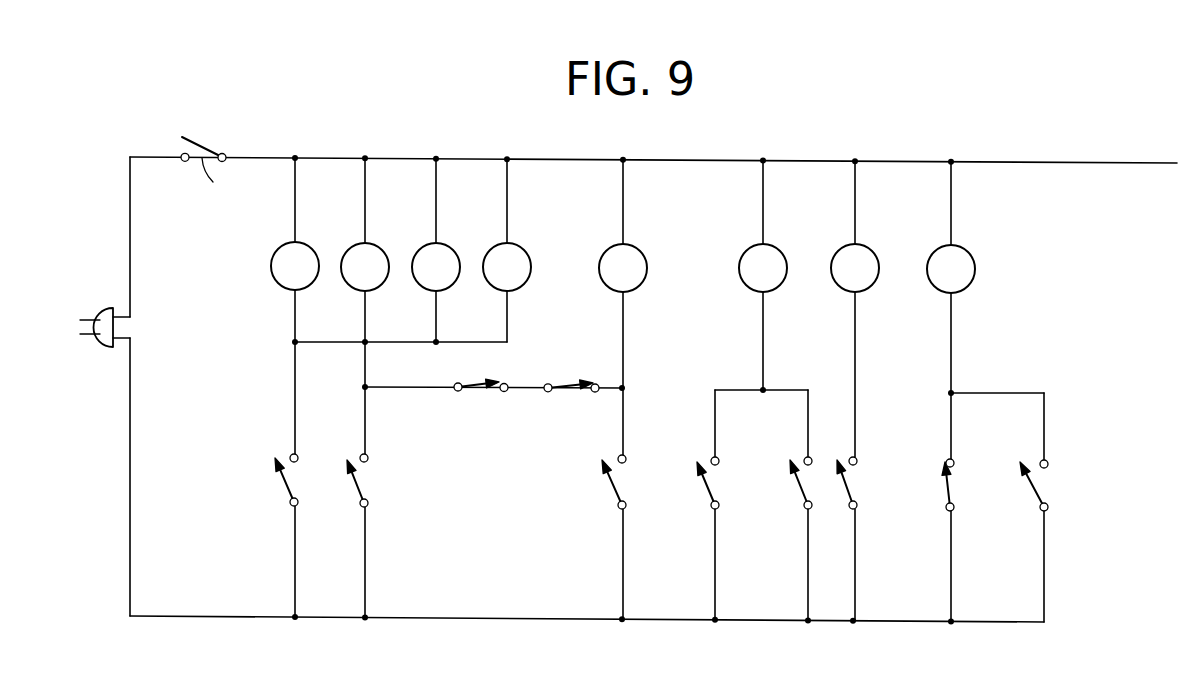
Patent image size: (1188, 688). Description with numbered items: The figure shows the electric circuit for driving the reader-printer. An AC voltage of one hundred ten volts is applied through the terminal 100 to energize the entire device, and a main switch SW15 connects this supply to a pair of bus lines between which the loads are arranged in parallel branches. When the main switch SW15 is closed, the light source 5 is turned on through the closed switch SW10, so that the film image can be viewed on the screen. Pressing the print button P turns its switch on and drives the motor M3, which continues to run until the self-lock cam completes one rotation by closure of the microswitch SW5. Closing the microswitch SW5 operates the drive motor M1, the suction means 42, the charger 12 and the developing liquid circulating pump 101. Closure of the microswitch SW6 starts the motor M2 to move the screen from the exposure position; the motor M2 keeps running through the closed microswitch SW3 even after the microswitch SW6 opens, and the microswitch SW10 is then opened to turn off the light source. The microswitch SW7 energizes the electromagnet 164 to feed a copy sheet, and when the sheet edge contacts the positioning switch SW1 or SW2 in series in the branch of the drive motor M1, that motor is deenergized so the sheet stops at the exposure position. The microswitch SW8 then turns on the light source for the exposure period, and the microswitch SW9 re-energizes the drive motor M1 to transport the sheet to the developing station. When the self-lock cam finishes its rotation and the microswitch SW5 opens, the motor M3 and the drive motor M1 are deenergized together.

The terminal 100 is at (91, 320).
The main switch SW15 is at (211, 174).
The motor M3 is at (307, 243).
The suction means 42 is at (372, 242).
The developing liquid circulating pump 101 is at (447, 242).
The charger 12 is at (517, 243).
The drive motor M1 is at (635, 243).
The motor M2 is at (773, 244).
The electromagnet 164 is at (867, 244).
The light source 5 is at (970, 247).
The print button P is at (290, 455).
The microswitch SW5 is at (360, 456).
The positioning switch SW1 is at (481, 392).
The positioning switch SW2 is at (570, 393).
The microswitch SW9 is at (620, 480).
The microswitch SW6 is at (710, 480).
The microswitch SW3 is at (799, 458).
The microswitch SW7 is at (850, 480).
The microswitch SW10 is at (947, 485).
The microswitch SW8 is at (1037, 478).